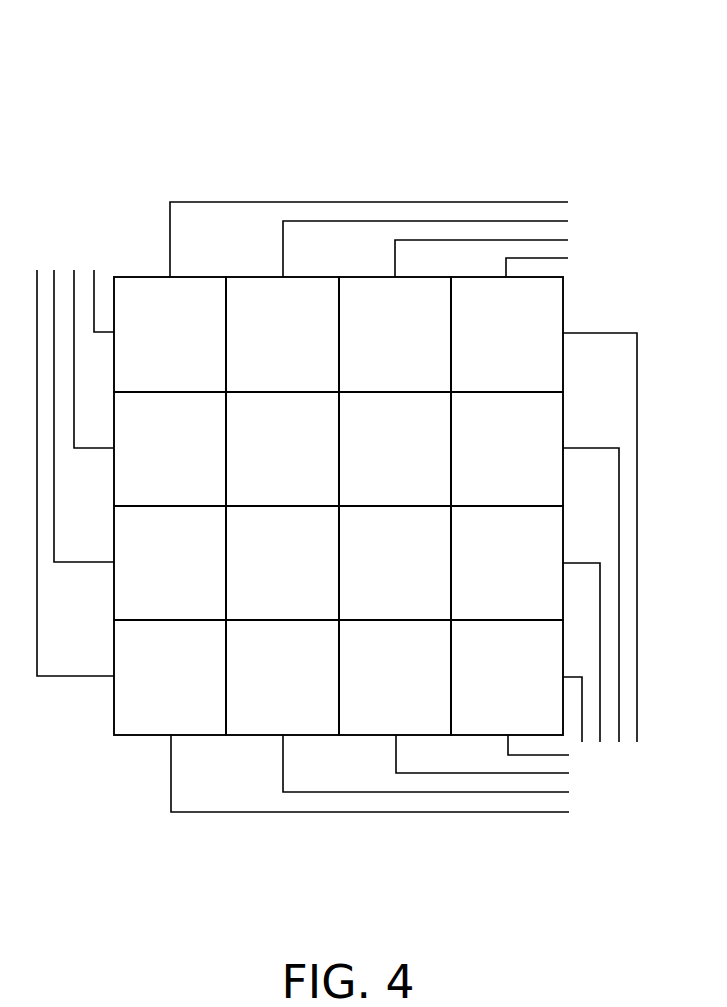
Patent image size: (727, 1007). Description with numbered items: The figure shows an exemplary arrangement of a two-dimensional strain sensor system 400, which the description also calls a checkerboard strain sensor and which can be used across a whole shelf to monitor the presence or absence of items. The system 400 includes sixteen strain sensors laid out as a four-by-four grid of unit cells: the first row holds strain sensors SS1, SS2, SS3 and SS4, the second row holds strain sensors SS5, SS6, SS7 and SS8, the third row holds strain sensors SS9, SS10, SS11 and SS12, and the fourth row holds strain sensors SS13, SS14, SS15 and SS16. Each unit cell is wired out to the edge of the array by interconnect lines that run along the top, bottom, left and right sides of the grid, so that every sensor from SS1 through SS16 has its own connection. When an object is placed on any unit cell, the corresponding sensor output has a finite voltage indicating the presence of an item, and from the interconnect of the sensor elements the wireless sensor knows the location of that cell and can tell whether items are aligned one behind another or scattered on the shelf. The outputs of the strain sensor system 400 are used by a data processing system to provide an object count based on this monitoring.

The two-dimensional strain sensor system 400 is at (337, 425).
The strain sensor 1 SS1 is at (148, 346).
The strain sensor 2 SS2 is at (261, 346).
The strain sensor 3 SS3 is at (373, 346).
The strain sensor 4 SS4 is at (485, 346).
The strain sensor 5 SS5 is at (148, 460).
The strain sensor 6 SS6 is at (261, 460).
The strain sensor 7 SS7 is at (373, 460).
The strain sensor 8 SS8 is at (485, 460).
The strain sensor 9 SS9 is at (148, 574).
The strain sensor 10 SS10 is at (254, 574).
The strain sensor 11 SS11 is at (366, 574).
The strain sensor 12 SS12 is at (478, 574).
The strain sensor 13 SS13 is at (141, 689).
The strain sensor 14 SS14 is at (254, 689).
The strain sensor 15 SS15 is at (366, 689).
The strain sensor 16 SS16 is at (478, 689).